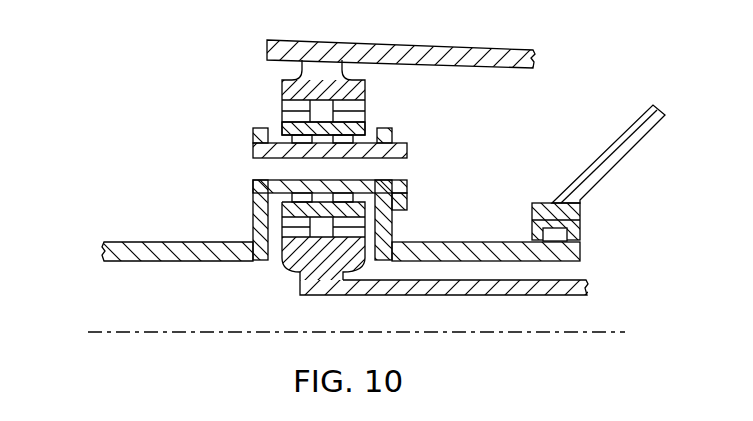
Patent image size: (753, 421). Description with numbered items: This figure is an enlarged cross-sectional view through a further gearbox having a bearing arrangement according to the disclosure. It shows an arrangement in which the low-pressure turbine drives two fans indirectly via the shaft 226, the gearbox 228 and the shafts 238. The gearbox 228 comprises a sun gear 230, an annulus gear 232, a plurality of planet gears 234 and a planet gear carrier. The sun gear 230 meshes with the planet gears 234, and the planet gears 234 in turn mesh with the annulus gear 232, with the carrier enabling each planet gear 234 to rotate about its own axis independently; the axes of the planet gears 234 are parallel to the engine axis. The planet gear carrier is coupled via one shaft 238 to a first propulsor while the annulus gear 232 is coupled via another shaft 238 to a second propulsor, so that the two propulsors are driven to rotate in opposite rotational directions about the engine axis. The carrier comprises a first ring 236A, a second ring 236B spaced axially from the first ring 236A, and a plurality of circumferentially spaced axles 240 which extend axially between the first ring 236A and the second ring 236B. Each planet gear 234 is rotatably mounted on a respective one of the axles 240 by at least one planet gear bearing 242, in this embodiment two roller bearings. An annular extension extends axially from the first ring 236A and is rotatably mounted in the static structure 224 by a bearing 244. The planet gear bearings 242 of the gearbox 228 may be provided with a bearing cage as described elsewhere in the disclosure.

The static structure 224 is at (627, 152).
The shaft 226 is at (475, 290).
The gearbox 228 is at (219, 298).
The sun gear 230 is at (287, 247).
The annulus gear 232 is at (338, 91).
The planet gear 234 is at (360, 128).
The first ring 236A is at (400, 222).
The second ring 236B is at (255, 212).
The shaft 238 is at (487, 63).
The axle 240 is at (256, 157).
The planet gear bearing 242 is at (253, 188).
The bearing 244 is at (567, 234).